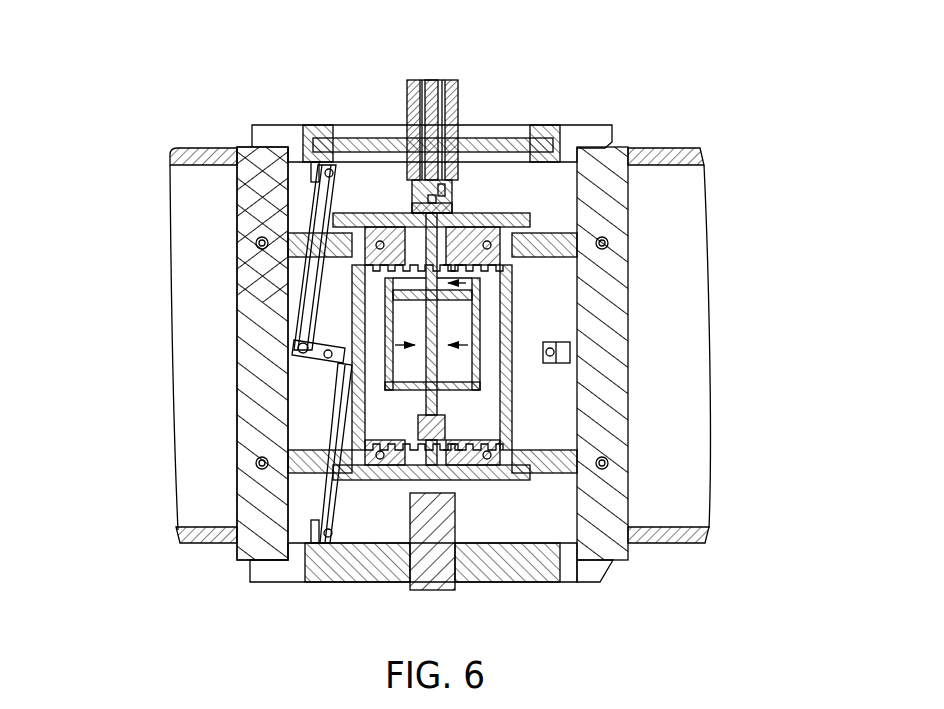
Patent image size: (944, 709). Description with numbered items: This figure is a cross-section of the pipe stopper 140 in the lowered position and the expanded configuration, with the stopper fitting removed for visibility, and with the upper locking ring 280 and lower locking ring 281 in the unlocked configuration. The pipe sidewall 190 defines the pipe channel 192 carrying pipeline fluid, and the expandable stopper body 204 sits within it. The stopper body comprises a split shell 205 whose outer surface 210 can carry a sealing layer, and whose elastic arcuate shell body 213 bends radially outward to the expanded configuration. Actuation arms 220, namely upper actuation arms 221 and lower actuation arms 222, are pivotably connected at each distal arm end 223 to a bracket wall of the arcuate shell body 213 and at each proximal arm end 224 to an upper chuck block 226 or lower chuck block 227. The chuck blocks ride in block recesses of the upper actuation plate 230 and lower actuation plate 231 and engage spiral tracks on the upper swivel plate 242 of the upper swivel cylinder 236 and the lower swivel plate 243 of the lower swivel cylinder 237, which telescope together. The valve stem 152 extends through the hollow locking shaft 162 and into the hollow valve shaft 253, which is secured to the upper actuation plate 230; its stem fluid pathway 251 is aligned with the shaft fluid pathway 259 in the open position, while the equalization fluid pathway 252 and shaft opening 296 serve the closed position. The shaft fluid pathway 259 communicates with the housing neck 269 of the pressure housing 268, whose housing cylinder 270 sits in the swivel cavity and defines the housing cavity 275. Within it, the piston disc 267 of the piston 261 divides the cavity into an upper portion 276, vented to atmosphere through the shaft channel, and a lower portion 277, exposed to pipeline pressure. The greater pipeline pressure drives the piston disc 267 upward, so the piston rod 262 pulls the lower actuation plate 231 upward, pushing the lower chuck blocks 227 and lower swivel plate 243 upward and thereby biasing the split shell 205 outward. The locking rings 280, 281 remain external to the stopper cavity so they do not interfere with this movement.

The pipe stopper 140 is at (310, 92).
The valve stem 152 is at (428, 84).
The locking shaft 162 is at (452, 80).
The pipe sidewall 190 is at (668, 548).
The pipe channel 192 is at (200, 337).
The expandable stopper body 204 is at (215, 192).
The split shell 205 is at (577, 242).
The outer surface 210 is at (630, 505).
The arcuate shell body 213 is at (512, 400).
The actuation arms 220 is at (258, 557).
The upper actuation arms 221 is at (352, 262).
The lower actuation arms 222 is at (262, 353).
The distal arm end 223 is at (262, 463).
The proximal arm end 224 is at (383, 482).
The upper chuck block 226 is at (665, 158).
The lower chuck block 227 is at (483, 482).
The upper actuation plate 230 is at (323, 247).
The lower actuation plate 231 is at (358, 482).
The upper swivel cylinder 236 is at (515, 352).
The lower swivel cylinder 237 is at (560, 405).
The upper swivel plate 242 is at (532, 222).
The lower swivel plate 243 is at (505, 432).
The stem fluid pathway 251 is at (432, 198).
The equalization fluid pathway 252 is at (425, 195).
The valve shaft 253 is at (430, 210).
The shaft fluid pathway 259 is at (458, 232).
The piston 261 is at (355, 395).
The piston rod 262 is at (571, 352).
The piston disc 267 is at (360, 300).
The pressure housing 268 is at (345, 285).
The housing neck 269 is at (507, 210).
The housing cylinder 270 is at (320, 245).
The housing cavity 275 is at (512, 315).
The upper portion 276 is at (512, 292).
The lower portion 277 is at (378, 335).
The upper locking ring 280 is at (575, 130).
The lower locking ring 281 is at (580, 573).
The shaft opening 296 is at (437, 206).